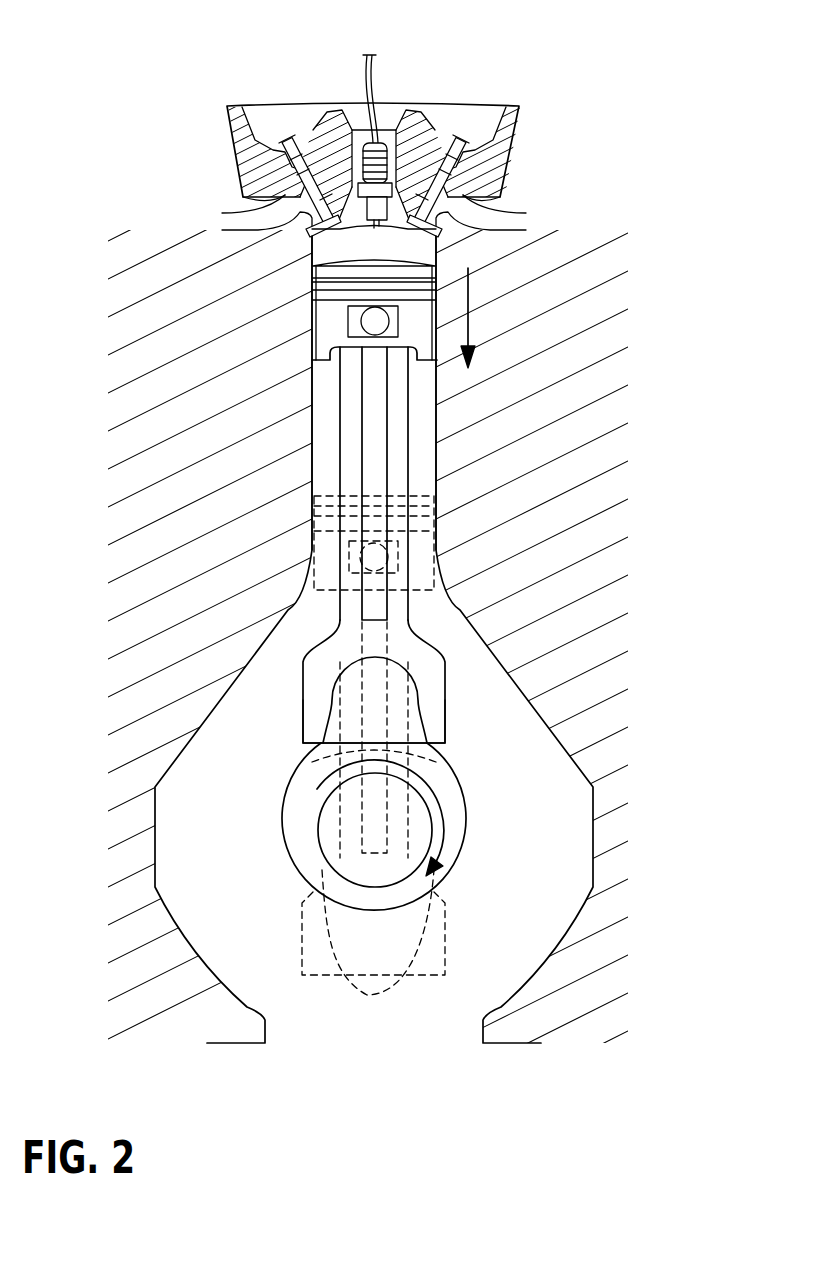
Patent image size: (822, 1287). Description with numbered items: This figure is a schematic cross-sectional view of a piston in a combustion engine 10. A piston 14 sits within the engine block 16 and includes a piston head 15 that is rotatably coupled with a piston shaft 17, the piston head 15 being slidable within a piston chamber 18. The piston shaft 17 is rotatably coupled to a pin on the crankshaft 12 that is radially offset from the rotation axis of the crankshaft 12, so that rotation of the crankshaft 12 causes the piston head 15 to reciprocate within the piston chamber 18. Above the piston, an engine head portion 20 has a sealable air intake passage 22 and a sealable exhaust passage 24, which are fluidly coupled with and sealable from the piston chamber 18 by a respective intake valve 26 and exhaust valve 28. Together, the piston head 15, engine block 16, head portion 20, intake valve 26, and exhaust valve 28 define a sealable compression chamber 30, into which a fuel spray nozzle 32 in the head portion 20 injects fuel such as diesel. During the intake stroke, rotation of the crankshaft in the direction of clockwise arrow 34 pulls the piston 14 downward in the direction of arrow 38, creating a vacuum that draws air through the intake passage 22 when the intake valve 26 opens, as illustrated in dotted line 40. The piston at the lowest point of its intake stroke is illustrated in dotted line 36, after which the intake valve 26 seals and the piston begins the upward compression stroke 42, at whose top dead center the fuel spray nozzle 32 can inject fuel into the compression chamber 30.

The combustion engine 10 is at (139, 54).
The crankshaft 12 is at (377, 872).
The piston 14 is at (414, 387).
The piston head 15 is at (413, 315).
The engine block 16 is at (536, 342).
The piston shaft 17 is at (398, 419).
The piston chamber 18 is at (328, 388).
The engine head portion 20 is at (413, 112).
The sealable air intake passage 22 is at (243, 203).
The sealable exhaust passage 24 is at (505, 203).
The intake valve 26 is at (297, 205).
The exhaust valve 28 is at (452, 205).
The compression chamber 30 is at (316, 287).
The fuel spray nozzle 32 is at (352, 108).
The clockwise arrow 34 is at (447, 826).
The dotted line 36 is at (408, 733).
The arrow 38 is at (470, 322).
The dotted line 40 is at (340, 241).
The compression stroke 42 is at (327, 320).